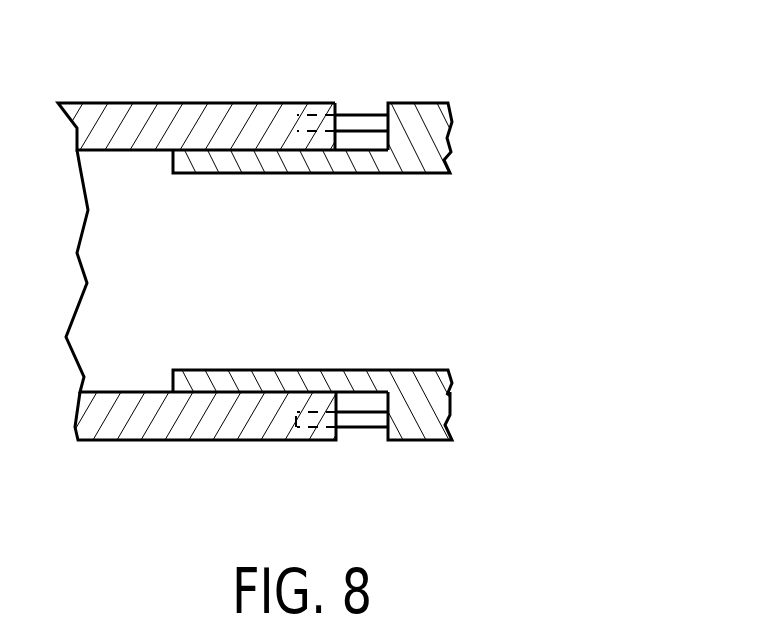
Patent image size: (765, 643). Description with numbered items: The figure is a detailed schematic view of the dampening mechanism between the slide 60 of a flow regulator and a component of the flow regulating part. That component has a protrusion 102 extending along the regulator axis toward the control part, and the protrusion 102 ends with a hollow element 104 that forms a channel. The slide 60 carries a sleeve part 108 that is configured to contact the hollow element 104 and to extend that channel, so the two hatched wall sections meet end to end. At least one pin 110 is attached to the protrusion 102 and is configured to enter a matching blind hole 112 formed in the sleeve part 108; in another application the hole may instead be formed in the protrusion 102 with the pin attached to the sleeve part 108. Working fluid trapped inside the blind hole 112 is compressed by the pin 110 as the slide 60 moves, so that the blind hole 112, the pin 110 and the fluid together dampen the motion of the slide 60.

The slide 60 is at (103, 122).
The sleeve part 108 is at (219, 122).
The hollow element 104 is at (275, 383).
The protrusion 102 is at (417, 418).
The pin 110 is at (362, 120).
The blind hole 112 is at (298, 127).